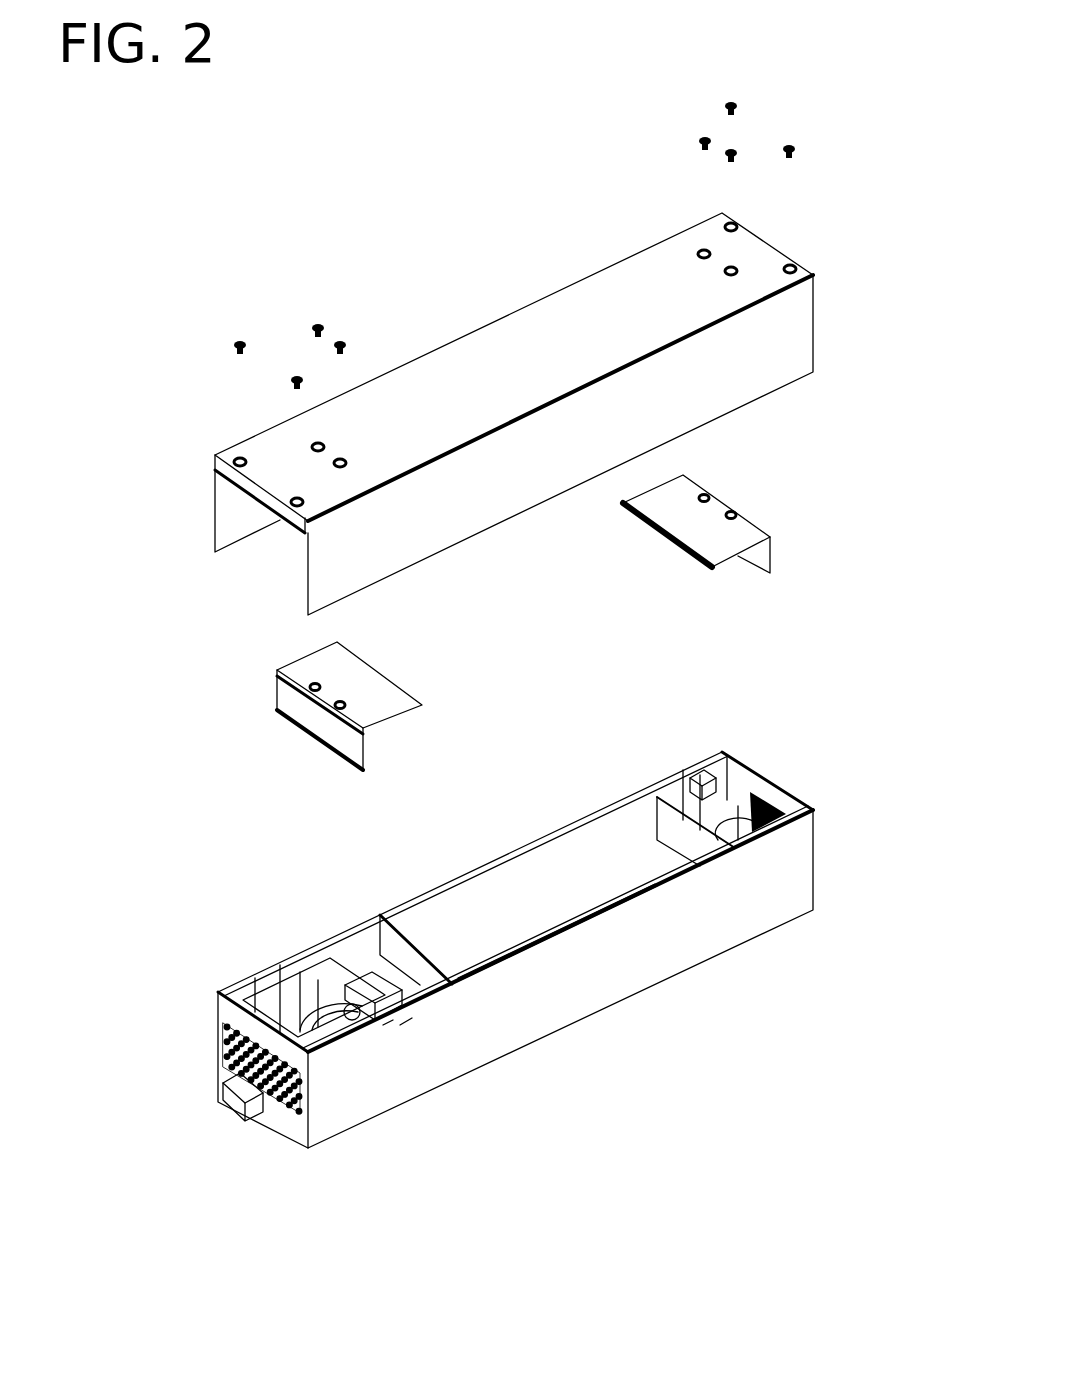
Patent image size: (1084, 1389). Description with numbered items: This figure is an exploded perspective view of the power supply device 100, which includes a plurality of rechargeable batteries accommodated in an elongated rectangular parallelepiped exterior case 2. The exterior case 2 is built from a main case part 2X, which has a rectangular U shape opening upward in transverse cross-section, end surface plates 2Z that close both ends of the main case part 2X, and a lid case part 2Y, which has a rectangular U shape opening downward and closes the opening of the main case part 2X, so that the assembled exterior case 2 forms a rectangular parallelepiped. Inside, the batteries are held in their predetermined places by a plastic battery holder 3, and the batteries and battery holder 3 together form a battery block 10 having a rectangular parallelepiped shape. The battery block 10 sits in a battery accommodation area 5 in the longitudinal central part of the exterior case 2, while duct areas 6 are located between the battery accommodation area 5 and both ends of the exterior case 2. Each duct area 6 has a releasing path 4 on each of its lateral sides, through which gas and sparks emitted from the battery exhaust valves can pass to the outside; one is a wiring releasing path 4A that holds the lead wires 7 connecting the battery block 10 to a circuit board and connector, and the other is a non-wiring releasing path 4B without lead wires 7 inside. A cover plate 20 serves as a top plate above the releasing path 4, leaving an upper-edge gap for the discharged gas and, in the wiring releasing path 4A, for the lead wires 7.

The power supply device 100 is at (283, 183).
The exterior case 2 is at (572, 700).
The main case part 2X is at (556, 1000).
The lid case part 2Y is at (628, 312).
The end surface plate 2Z is at (501, 999).
The cover plate 20 is at (357, 680).
The battery holder 3 is at (383, 1025).
The releasing path 4 is at (491, 900).
The wiring releasing path 4A is at (157, 1040).
The non-wiring releasing path 4B is at (233, 1030).
The battery accommodation area 5 is at (608, 790).
The duct area 6 is at (360, 913).
The lead wire 7 is at (402, 976).
The battery block 10 is at (400, 1025).